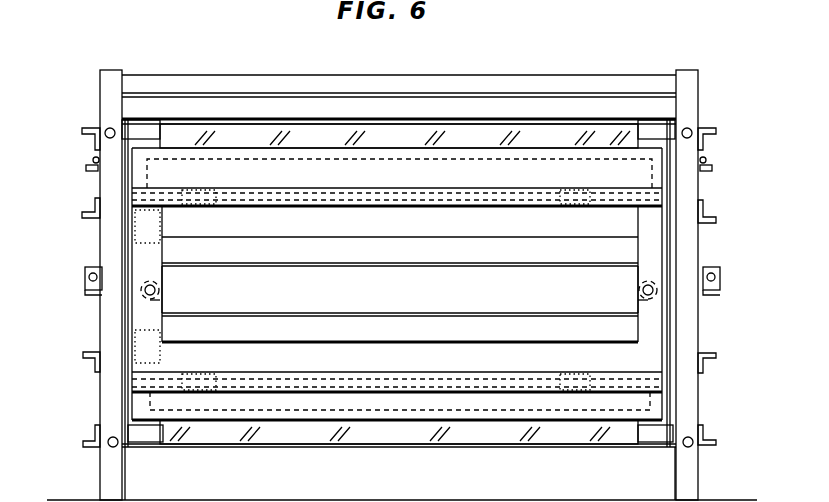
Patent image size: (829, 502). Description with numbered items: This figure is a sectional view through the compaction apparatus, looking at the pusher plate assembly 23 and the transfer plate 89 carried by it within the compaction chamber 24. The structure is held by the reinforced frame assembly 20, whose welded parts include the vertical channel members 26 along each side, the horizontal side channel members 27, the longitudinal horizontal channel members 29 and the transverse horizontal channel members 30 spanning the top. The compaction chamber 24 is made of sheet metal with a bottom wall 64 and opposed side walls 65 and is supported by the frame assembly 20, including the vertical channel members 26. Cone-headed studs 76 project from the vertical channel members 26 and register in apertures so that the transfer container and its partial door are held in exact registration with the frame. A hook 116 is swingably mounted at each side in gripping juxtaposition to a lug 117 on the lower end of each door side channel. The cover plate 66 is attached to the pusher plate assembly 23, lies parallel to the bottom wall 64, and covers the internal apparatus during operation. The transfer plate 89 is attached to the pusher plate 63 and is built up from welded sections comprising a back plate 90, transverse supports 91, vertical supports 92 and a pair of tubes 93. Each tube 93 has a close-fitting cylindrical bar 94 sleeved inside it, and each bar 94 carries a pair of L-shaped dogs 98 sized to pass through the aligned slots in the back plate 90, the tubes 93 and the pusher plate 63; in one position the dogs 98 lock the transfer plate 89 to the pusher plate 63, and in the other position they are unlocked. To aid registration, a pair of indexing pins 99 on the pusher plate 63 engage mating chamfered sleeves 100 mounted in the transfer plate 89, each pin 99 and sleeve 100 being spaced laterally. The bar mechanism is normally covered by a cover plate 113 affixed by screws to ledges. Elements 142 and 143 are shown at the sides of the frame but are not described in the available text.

The reinforced frame assembly 20 is at (247, 80).
The pusher plate assembly 23 is at (326, 138).
The compaction chamber 24 is at (226, 438).
The vertical channel members 26 is at (110, 78).
The horizontal side channel members 27 is at (90, 128).
The longitudinal horizontal channel members 29 is at (143, 130).
The transverse horizontal channel members 30 is at (466, 107).
The pusher plate 63 is at (373, 137).
The bottom wall 64 is at (345, 440).
The side walls 65 is at (126, 310).
The cover plate 66 is at (528, 128).
The cone-headed studs 76 is at (110, 128).
The transfer plate 89 is at (405, 226).
The back plate 90 is at (400, 289).
The transverse supports 91 is at (254, 255).
The vertical supports 92 is at (157, 305).
The tubes 93 is at (388, 204).
The cylindrical bar 94 is at (285, 193).
The L-shaped dogs 98 is at (190, 196).
The indexing pins 99 is at (158, 291).
The chamfered sleeves 100 is at (143, 278).
The cover plate 113 is at (163, 231).
The hook 116 is at (94, 160).
The lug 117 is at (96, 168).
The latch 142 is at (90, 292).
The latch keeper 143 is at (84, 279).